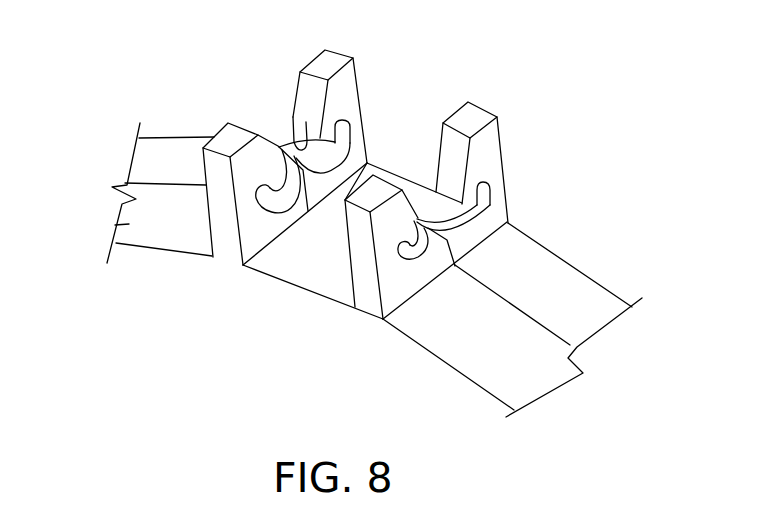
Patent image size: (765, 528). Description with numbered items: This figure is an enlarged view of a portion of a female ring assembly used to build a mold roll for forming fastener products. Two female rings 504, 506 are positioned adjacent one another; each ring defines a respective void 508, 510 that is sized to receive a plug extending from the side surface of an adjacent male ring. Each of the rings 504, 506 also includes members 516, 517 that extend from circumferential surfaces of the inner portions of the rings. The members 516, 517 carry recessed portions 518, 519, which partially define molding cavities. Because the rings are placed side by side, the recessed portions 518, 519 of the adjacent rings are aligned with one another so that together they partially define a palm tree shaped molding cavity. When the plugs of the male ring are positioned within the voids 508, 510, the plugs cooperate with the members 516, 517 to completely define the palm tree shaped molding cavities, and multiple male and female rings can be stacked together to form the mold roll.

The female ring 504 is at (116, 232).
The female ring 506 is at (567, 268).
The void 508 is at (423, 195).
The void 510 is at (287, 276).
The member 516 is at (228, 135).
The member 517 is at (337, 58).
The recessed portion 518 is at (320, 140).
The recessed portion 519 is at (292, 120).